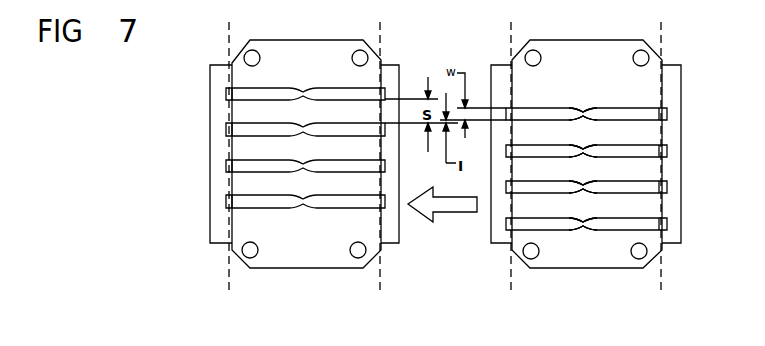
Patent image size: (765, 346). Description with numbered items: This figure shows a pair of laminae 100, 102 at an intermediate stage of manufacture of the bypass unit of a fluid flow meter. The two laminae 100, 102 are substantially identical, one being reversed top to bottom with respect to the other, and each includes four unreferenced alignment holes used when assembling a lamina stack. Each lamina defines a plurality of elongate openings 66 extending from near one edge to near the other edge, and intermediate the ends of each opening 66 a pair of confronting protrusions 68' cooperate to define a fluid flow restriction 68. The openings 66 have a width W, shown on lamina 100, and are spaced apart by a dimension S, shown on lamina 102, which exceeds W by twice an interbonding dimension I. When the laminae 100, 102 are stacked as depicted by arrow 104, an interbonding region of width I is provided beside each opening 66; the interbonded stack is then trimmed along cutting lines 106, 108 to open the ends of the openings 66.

The elongate opening 66 is at (657, 116).
The fluid flow restriction 68 is at (596, 154).
The confronting protrusion 68' is at (568, 154).
The lamina 100 is at (578, 268).
The lamina 102 is at (303, 268).
The arrow 104 is at (471, 210).
The cutting line 106 is at (378, 277).
The cutting line 108 is at (228, 280).